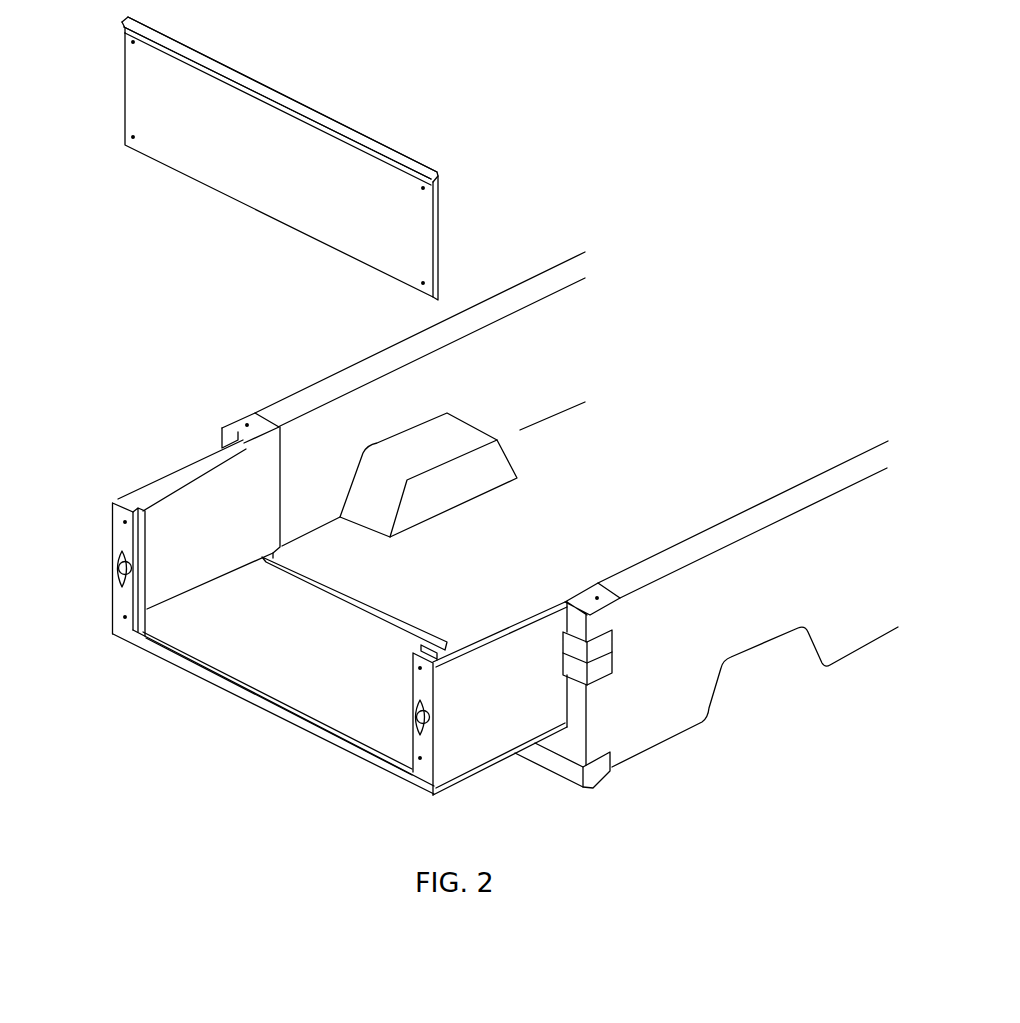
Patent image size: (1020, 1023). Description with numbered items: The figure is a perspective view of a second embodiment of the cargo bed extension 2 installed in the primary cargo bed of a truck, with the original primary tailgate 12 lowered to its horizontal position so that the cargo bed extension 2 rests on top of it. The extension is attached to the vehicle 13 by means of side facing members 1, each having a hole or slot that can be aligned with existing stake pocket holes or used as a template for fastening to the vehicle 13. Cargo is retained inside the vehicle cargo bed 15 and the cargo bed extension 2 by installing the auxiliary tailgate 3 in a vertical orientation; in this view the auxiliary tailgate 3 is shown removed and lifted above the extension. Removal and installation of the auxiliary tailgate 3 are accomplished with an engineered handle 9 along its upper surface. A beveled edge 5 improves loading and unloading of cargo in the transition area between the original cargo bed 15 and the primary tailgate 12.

The side facing member 1 is at (233, 426).
The cargo bed extension 2 is at (177, 470).
The auxiliary tailgate 3 is at (148, 101).
The beveled edge 5 is at (368, 605).
The engineered handle 9 is at (367, 143).
The primary tailgate 12 is at (488, 765).
The vehicle 13 is at (702, 652).
The vehicle cargo bed 15 is at (587, 512).